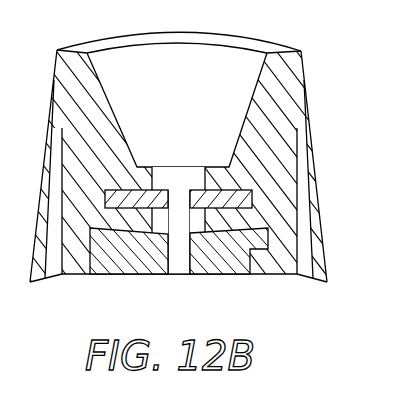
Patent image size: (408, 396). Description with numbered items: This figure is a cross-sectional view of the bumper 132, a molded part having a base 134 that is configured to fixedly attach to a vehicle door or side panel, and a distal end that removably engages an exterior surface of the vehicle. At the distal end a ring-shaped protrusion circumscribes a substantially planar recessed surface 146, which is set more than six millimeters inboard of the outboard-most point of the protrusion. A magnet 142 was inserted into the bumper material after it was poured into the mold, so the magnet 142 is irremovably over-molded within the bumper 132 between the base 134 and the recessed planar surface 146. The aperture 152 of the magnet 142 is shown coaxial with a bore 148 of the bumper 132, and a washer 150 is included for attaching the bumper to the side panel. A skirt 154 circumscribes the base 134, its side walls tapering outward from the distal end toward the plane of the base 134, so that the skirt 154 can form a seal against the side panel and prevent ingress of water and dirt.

The bumper 132 is at (286, 82).
The base 134 is at (267, 260).
The magnet 142 is at (240, 200).
The recessed planar surface 146 is at (138, 165).
The bore 148 is at (173, 262).
The washer 150 is at (245, 247).
The aperture 152 is at (180, 197).
The skirt 154 is at (301, 147).